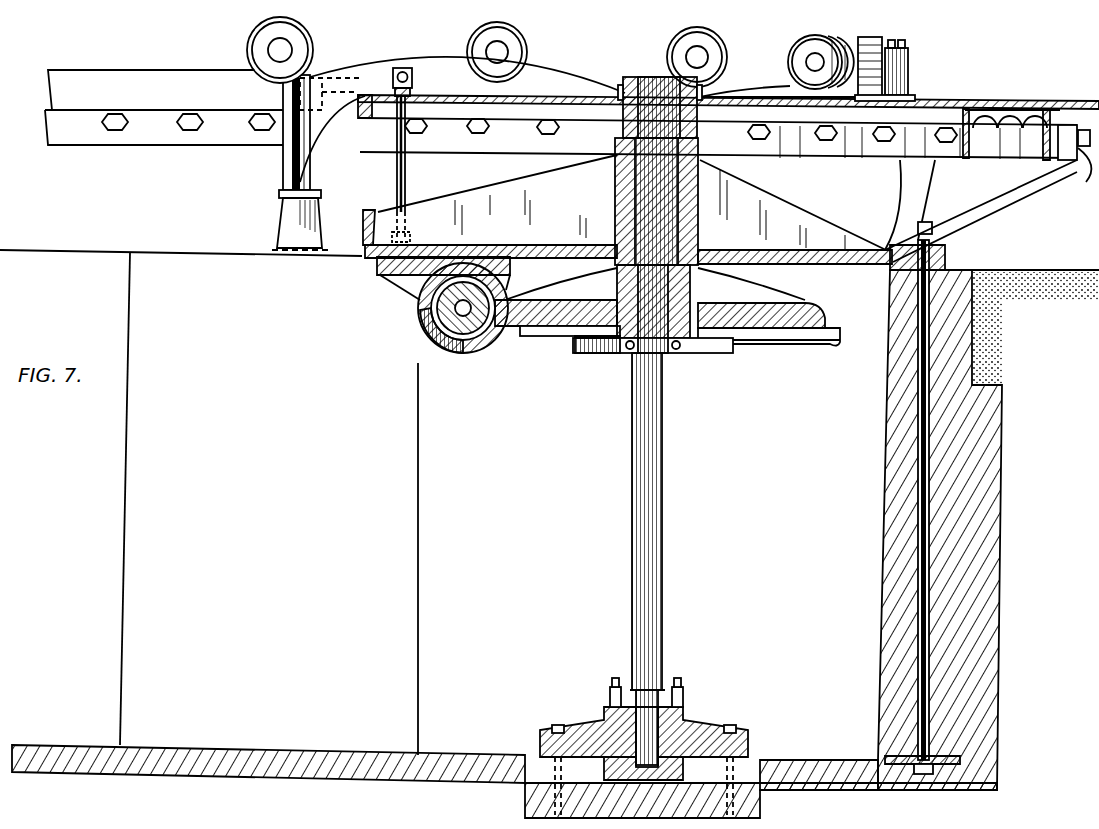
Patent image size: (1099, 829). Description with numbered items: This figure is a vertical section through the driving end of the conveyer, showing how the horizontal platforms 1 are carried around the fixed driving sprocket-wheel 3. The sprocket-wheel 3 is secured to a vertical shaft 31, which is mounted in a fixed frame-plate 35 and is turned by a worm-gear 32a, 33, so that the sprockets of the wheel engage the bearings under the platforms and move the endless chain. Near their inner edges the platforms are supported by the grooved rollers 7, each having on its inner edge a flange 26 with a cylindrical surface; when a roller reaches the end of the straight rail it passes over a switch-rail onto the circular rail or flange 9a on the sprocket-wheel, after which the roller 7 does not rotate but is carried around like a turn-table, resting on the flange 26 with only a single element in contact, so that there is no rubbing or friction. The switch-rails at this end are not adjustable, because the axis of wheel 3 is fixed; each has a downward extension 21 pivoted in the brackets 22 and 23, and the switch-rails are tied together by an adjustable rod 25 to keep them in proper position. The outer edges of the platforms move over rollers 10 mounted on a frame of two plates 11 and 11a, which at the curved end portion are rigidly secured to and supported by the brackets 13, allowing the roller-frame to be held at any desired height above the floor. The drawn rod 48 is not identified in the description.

The horizontal platform 1 is at (1022, 108).
The sprocket-wheel 3 is at (358, 96).
The wheel or roller 7 is at (300, 50).
The circular rail or flange 9a is at (452, 92).
The wheel or roller 10 is at (1062, 121).
The plate 11 is at (1090, 176).
The plate 11a is at (1037, 162).
The bracket 13 is at (995, 215).
The downward extension 21 is at (310, 137).
The bracket 22 is at (280, 193).
The bracket 23 is at (283, 112).
The adjustable rod 25 is at (402, 68).
The flange 26 is at (838, 48).
The vertical shaft 31 is at (664, 525).
The worm-gear 32a is at (432, 320).
The worm-gear 33 is at (540, 330).
The fixed frame-plate 35 is at (760, 250).
The rod 48 is at (406, 168).